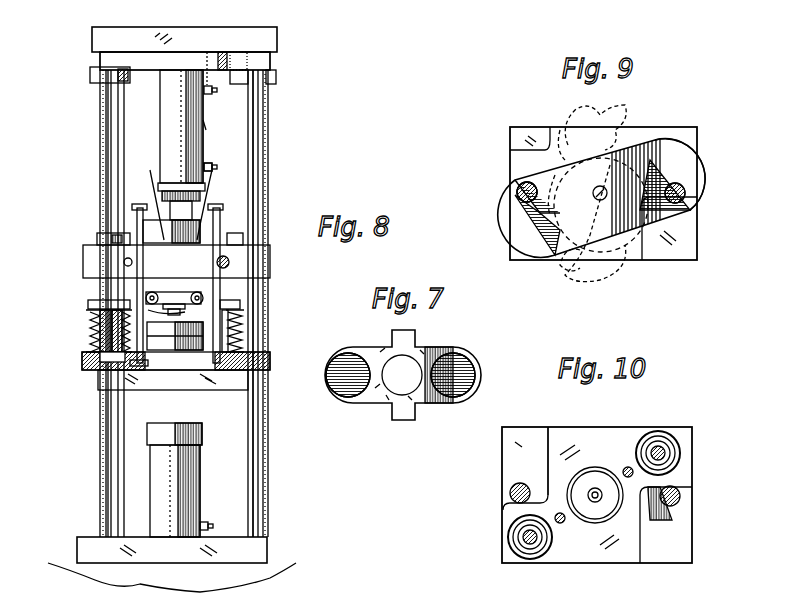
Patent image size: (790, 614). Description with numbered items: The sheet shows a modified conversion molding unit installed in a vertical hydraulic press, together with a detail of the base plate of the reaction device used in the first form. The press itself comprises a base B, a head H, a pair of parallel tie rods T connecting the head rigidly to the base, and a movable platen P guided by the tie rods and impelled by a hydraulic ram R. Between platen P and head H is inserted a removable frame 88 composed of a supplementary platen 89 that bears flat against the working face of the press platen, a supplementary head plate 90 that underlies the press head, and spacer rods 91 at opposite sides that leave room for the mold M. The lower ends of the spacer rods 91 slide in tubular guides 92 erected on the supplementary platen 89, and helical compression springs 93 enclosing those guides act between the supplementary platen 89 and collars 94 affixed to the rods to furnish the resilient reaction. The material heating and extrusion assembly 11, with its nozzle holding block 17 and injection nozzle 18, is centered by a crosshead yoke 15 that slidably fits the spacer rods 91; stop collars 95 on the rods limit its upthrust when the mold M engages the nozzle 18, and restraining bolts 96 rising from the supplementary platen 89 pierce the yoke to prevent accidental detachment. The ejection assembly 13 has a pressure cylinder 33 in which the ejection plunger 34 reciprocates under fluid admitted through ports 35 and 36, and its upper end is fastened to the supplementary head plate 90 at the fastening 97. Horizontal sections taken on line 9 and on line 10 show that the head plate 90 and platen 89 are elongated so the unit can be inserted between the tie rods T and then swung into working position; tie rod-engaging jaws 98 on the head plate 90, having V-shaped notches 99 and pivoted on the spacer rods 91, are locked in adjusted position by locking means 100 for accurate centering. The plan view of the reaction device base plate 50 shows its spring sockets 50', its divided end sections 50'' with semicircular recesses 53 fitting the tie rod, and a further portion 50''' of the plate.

In FIG. 8, the section line 9— 9 is at (92, 52).
In FIG. 8, the section line 10— 10 is at (82, 352).
In FIG. 8, the material heating and extrusion assembly 11 is at (168, 232).
In FIG. 10, the material heating and extrusion assembly 11 is at (502, 503).
In FIG. 8, the ejection assembly 13 is at (152, 138).
In FIG. 8, the crosshead yoke 15 is at (232, 248).
In FIG. 9, the crosshead yoke 15 is at (560, 140).
In FIG. 8, the nozzle holding block 17 is at (172, 292).
In FIG. 8, the injection nozzle 18 is at (186, 288).
In FIG. 8, the pressure cylinder 33 is at (200, 125).
In FIG. 8, the ejection plunger 34 is at (208, 162).
In FIG. 8, the port 35 is at (209, 70).
In FIG. 8, the port 36 is at (217, 126).
In FIG. 7, the base plate 50 is at (403, 389).
In FIG. 7, the socket 50' is at (420, 356).
In FIG. 7, the end section 50'' is at (453, 388).
In FIG. 7, the clamp bore 50''' is at (339, 386).
In FIG. 7, the semicircular recess 53 is at (412, 360).
In FIG. 8, the frame 88 is at (98, 187).
In FIG. 9, the frame 88 is at (530, 228).
In FIG. 10, the frame 88 is at (522, 540).
In FIG. 8, the supplementary platen 89 is at (84, 372).
In FIG. 9, the supplementary platen 89 is at (598, 108).
In FIG. 10, the supplementary platen 89 is at (566, 429).
In FIG. 8, the supplementary head plate 90 is at (148, 62).
In FIG. 9, the supplementary head plate 90 is at (635, 135).
In FIG. 8, the spacer rod 91 is at (104, 178).
In FIG. 9, the spacer rod 91 is at (688, 150).
In FIG. 10, the spacer rod 91 is at (672, 440).
In FIG. 8, the tubular guide 92 is at (88, 330).
In FIG. 10, the tubular guide 92 is at (676, 450).
In FIG. 8, the helical compression spring 93 is at (99, 318).
In FIG. 10, the helical compression spring 93 is at (680, 460).
In FIG. 8, the collar 94 is at (95, 300).
In FIG. 8, the stop collar 95 is at (96, 243).
In FIG. 8, the restraining bolt 96 is at (132, 208).
In FIG. 10, the restraining bolt 96 is at (628, 466).
In FIG. 9, the fastening 97 is at (590, 260).
In FIG. 8, the tie rod-engaging jaw 98 is at (100, 74).
In FIG. 9, the tie rod-engaging jaw 98 is at (690, 168).
In FIG. 9, the notch 99 is at (698, 180).
In FIG. 9, the locking means 100 is at (672, 183).
In FIG. 8, the head H is at (100, 50).
In FIG. 8, the tie rod T is at (100, 158).
In FIG. 9, the tie rod T is at (690, 190).
In FIG. 10, the tie rod T is at (510, 490).
In FIG. 8, the base B is at (264, 560).
In FIG. 9, the base B is at (544, 264).
In FIG. 10, the base B is at (550, 567).
In FIG. 8, the mold M is at (160, 350).
In FIG. 10, the mold M is at (614, 531).
In FIG. 8, the platen P is at (236, 398).
In FIG. 10, the platen P is at (531, 485).
In FIG. 8, the hydraulic ram R is at (153, 510).